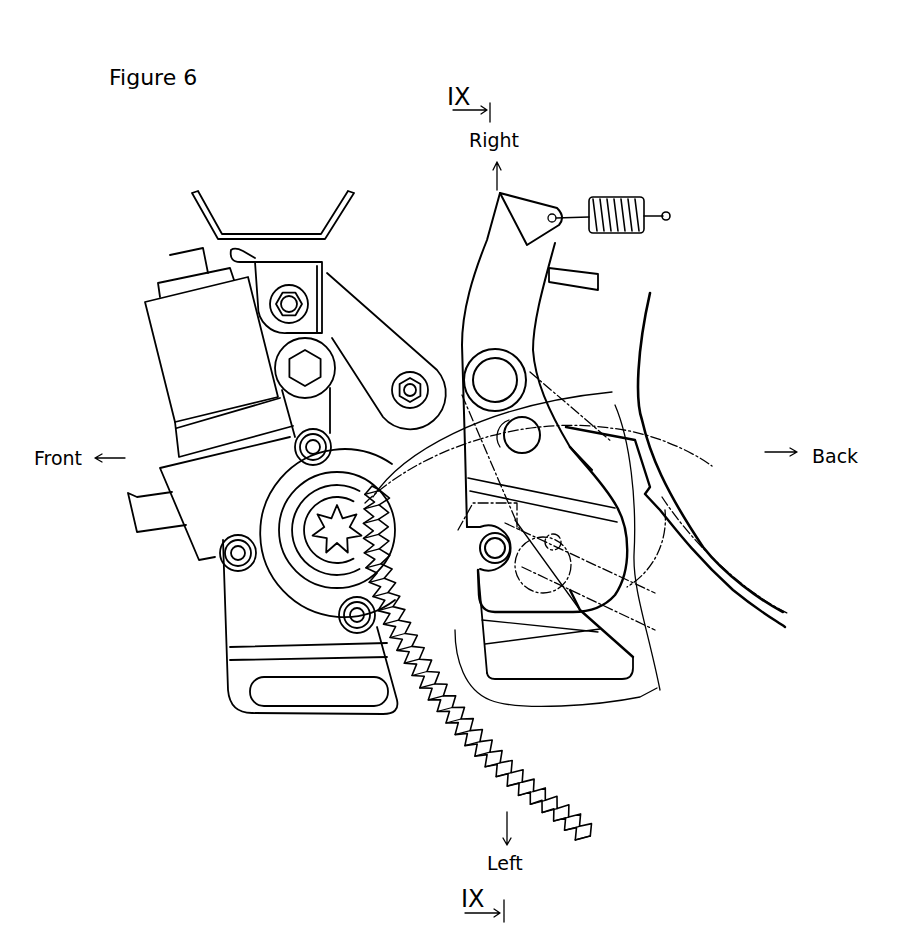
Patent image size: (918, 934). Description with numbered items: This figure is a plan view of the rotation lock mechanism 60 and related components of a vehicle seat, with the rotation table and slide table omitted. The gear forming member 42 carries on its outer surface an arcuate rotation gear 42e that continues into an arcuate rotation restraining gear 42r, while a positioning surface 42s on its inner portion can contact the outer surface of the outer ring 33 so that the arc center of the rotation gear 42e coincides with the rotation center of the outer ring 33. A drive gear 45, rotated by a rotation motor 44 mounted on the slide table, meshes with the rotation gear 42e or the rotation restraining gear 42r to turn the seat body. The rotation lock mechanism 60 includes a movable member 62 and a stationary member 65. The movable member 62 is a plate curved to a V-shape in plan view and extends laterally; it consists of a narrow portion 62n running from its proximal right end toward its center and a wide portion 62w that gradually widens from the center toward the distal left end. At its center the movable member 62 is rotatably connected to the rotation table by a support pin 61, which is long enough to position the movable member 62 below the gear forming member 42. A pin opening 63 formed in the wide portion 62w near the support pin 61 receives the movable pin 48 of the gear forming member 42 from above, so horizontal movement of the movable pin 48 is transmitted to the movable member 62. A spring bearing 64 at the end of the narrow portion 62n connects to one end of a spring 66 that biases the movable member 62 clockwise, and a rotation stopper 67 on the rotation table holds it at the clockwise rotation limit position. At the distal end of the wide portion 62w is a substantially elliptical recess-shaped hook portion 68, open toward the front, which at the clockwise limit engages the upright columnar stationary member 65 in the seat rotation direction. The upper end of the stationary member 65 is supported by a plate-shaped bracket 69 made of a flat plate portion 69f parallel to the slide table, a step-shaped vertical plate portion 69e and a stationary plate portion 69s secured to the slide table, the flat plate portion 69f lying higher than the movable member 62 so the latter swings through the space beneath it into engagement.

The outer ring 33 is at (650, 340).
The gear forming member 42 is at (486, 784).
The rotation gear 42e is at (460, 743).
The rotation restraining gear 42r is at (383, 515).
The positioning surface 42s is at (650, 448).
The rotation motor 44 is at (267, 522).
The drive gear 45 is at (310, 540).
The movable pin 48 is at (522, 437).
The rotation lock mechanism 60 is at (443, 322).
The support pin 61 is at (495, 382).
The movable member 62 is at (579, 447).
The narrow portion 62n is at (503, 253).
The wide portion 62w is at (577, 485).
The pin opening 63 is at (460, 447).
The spring bearing 64 is at (530, 213).
The stationary member 65 is at (490, 556).
The spring 66 is at (608, 197).
The rotation stopper 67 is at (570, 271).
The hook portion 68 is at (607, 580).
The bracket 69 is at (577, 649).
The vertical plate portion 69e is at (567, 632).
The flat plate portion 69f is at (478, 575).
The stationary plate portion 69s is at (615, 667).